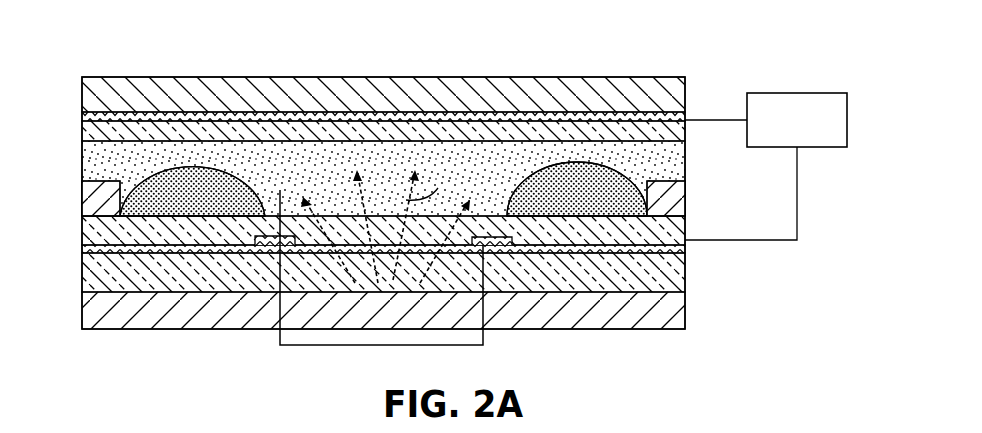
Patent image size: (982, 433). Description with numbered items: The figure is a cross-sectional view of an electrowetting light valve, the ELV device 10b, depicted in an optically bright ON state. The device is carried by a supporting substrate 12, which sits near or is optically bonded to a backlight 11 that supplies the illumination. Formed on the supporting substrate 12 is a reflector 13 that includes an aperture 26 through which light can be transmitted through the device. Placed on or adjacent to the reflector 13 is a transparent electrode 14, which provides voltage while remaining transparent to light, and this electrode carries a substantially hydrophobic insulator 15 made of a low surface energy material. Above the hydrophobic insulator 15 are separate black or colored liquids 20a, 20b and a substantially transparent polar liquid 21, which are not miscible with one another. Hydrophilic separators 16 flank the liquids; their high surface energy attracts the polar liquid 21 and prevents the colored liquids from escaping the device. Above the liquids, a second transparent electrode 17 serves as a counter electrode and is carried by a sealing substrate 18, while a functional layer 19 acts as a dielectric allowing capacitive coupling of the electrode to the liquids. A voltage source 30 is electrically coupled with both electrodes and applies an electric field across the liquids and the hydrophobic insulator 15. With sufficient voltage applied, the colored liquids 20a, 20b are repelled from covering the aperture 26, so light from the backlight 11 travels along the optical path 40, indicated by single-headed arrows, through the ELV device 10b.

The ELV device 10b is at (666, 44).
The sealing substrate 18 is at (685, 98).
The second transparent electrode 17 is at (82, 114).
The functional layer 19 is at (82, 132).
The transparent liquid 21 is at (685, 163).
The black or colored liquid 20a is at (82, 166).
The black or colored liquid 20b is at (546, 170).
The hydrophilic separator 16 is at (90, 197).
The hydrophobic insulator 15 is at (92, 232).
The reflector 13 is at (82, 246).
The supporting substrate 12 is at (82, 272).
The backlight 11 is at (685, 310).
The transparent electrode 14 is at (370, 226).
The optical path 40 is at (429, 185).
The aperture 26 is at (383, 346).
The voltage source 30 is at (824, 93).